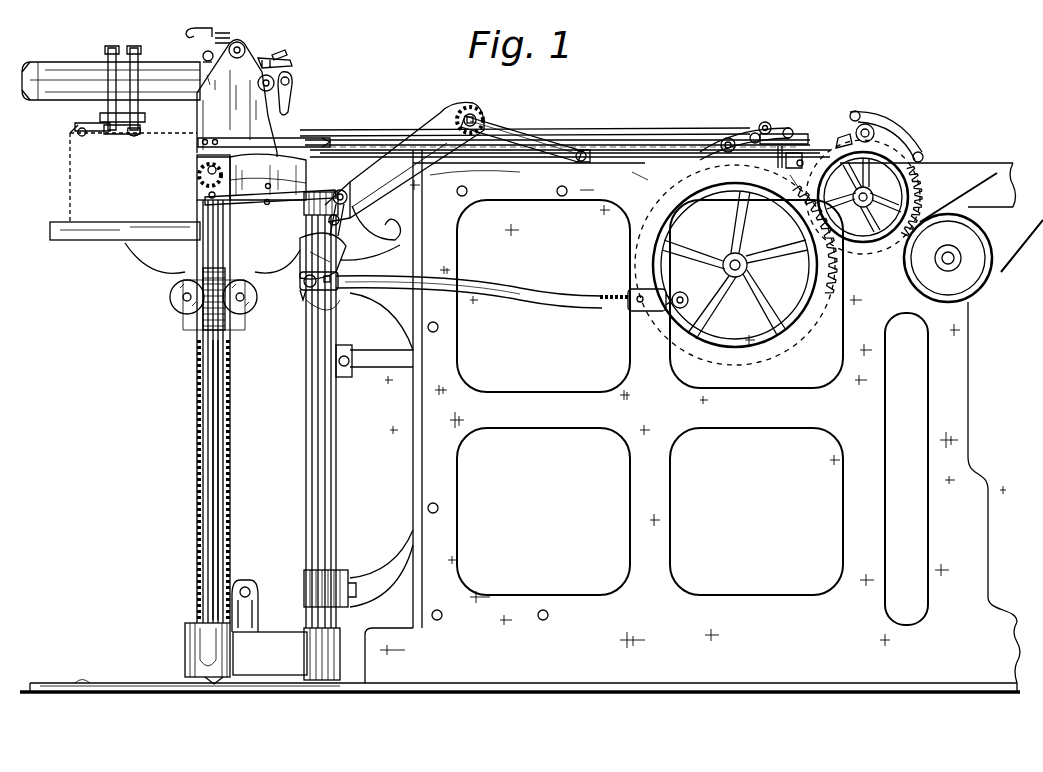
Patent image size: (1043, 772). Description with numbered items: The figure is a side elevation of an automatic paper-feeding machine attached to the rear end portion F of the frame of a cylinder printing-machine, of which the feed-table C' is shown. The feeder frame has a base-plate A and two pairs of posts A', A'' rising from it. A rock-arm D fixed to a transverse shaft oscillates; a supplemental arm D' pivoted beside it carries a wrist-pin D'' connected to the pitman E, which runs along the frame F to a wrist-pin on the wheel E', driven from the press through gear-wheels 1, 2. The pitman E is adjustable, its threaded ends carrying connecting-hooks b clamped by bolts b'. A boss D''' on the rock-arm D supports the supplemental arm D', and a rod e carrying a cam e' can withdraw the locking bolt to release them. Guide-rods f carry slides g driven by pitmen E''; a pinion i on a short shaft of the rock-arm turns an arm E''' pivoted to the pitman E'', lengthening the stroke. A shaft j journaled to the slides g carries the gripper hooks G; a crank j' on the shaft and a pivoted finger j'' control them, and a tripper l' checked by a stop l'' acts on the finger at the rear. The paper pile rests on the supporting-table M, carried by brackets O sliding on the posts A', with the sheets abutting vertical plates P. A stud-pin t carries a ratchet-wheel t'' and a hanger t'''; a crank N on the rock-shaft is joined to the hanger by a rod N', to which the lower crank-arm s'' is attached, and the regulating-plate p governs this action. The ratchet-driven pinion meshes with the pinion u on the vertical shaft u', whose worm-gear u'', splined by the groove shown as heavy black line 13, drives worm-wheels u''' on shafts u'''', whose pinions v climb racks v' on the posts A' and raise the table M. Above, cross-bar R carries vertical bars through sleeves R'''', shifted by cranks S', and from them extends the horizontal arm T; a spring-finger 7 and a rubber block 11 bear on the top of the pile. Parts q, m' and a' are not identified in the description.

The base-plate A is at (520, 657).
The posts A' is at (253, 436).
The posts A'' is at (251, 120).
The horizontal arm T is at (111, 74).
The pinion u is at (117, 90).
The pinions v is at (140, 88).
The spring-finger 7 is at (140, 132).
The rubber block 11 is at (133, 172).
The paper-supporting table M is at (100, 244).
The brackets O is at (158, 262).
The vertical shaft u' is at (191, 480).
The worm-gear u'' is at (192, 305).
The worm-wheels u''' is at (206, 305).
The shafts u'''' is at (202, 313).
The vertical racks v' is at (213, 404).
The heavy black line 13 is at (215, 455).
The stud-pin t is at (201, 177).
The ratchet-wheel t'' is at (184, 158).
The hanger t''' is at (182, 195).
The cross-bar R is at (234, 40).
The cranks S' is at (201, 23).
The sleeves R'''' is at (192, 49).
The pin q is at (201, 61).
The latch m' is at (267, 72).
The regulating-plate p is at (279, 45).
The tripper l' is at (293, 93).
The stop l'' is at (263, 95).
The vertical plates P is at (264, 131).
The crank-arm s'' is at (268, 177).
The rod N' is at (270, 206).
The feed-table C' is at (525, 123).
The pitmen E'' is at (567, 135).
The pinion i is at (474, 112).
The arm E''' is at (521, 135).
The rod e is at (480, 190).
The rock-arm D is at (404, 162).
The crank N is at (347, 190).
The link a' is at (331, 224).
The supplemental arm D' is at (323, 256).
The cam e' is at (376, 225).
The boss D''' is at (370, 254).
The bolt b' is at (466, 282).
The wrist-pin D'' is at (289, 303).
The connecting-hooks b is at (485, 315).
The pitman E is at (504, 291).
The wheel E' is at (736, 265).
The gear-wheel 1 is at (822, 255).
The gear-wheel 2 is at (925, 214).
The hook G is at (808, 138).
The slides g is at (728, 137).
The finger j'' is at (749, 123).
The crank j' is at (766, 116).
The shaft j is at (784, 137).
The frame F is at (475, 173).
The guide-rods f is at (640, 166).